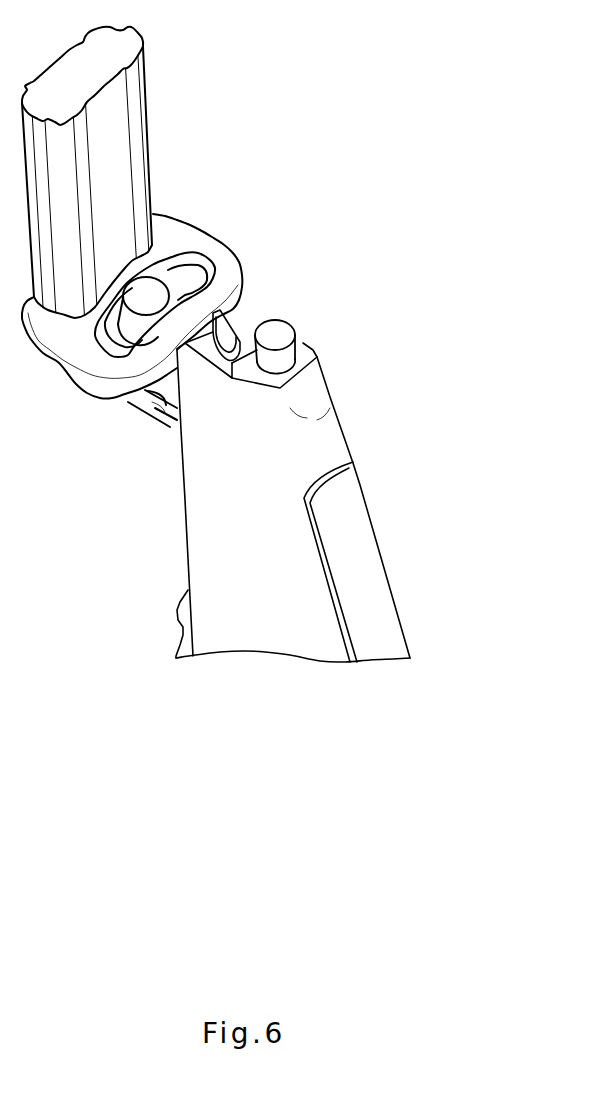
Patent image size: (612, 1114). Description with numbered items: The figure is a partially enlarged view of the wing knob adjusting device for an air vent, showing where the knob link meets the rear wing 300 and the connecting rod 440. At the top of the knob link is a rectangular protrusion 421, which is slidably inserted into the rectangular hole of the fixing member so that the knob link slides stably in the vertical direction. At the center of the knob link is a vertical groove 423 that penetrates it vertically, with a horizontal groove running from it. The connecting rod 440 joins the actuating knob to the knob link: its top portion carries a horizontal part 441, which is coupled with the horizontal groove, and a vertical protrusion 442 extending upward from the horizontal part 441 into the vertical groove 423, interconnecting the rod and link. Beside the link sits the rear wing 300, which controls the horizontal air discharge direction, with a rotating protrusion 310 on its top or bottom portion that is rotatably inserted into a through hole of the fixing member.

The rectangular protrusion 421 is at (133, 93).
The vertical groove 423 is at (187, 258).
The connecting rod 440 is at (292, 265).
The horizontal part 441 is at (192, 278).
The vertical protrusion 442 is at (236, 300).
The rear wing 300 is at (217, 517).
The rotating protrusion 310 is at (282, 330).